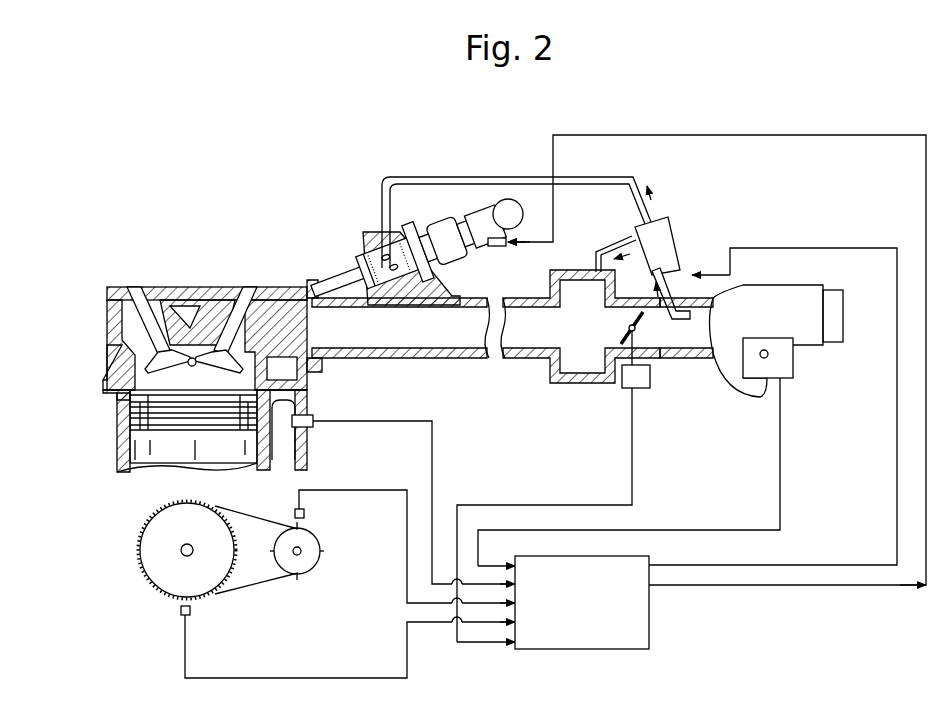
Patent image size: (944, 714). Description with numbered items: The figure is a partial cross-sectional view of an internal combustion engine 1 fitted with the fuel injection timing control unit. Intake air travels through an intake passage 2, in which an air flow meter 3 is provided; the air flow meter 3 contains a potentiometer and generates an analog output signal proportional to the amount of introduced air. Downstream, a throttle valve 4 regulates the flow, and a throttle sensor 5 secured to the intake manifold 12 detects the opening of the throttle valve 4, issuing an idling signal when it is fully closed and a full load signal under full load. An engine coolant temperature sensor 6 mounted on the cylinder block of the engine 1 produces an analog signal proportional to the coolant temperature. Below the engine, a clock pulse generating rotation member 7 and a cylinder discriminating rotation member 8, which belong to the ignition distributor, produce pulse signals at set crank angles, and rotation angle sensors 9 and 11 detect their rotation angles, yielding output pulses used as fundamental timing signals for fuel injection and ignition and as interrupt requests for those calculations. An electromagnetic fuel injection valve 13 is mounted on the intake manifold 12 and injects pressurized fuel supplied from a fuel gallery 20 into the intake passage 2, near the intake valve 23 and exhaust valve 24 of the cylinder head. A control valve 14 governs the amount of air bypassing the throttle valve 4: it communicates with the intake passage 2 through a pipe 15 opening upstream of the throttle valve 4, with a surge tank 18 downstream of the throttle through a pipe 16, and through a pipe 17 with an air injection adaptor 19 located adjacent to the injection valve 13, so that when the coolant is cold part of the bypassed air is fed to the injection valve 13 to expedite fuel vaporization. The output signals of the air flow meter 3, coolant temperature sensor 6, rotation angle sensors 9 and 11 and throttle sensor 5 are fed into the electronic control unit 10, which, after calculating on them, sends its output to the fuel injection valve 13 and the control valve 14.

The engine 1 is at (110, 410).
The intake passage 2 is at (693, 337).
The air flow meter 3 is at (786, 378).
The throttle valve 4 is at (636, 331).
The throttle sensor 5 is at (640, 388).
The engine coolant temperature sensor 6 is at (316, 428).
The clock pulse generating rotation member 7 is at (322, 548).
The cylinder discriminating rotation member 8 is at (140, 550).
The rotation angle sensor 9 is at (306, 513).
The electronic control unit 10 is at (574, 650).
The rotation angle sensor 11 is at (180, 613).
The intake manifold 12 is at (437, 340).
The electromagnetic fuel injection valve 13 is at (455, 258).
The control valve 14 is at (672, 248).
The pipe 15 is at (680, 294).
The pipe 16 is at (613, 240).
The pipe 17 is at (655, 218).
The surge tank 18 is at (570, 368).
The air injection adaptor 19 is at (358, 270).
The fuel gallery 20 is at (524, 216).
The intake valve 23 is at (248, 287).
The exhaust valve 24 is at (128, 287).